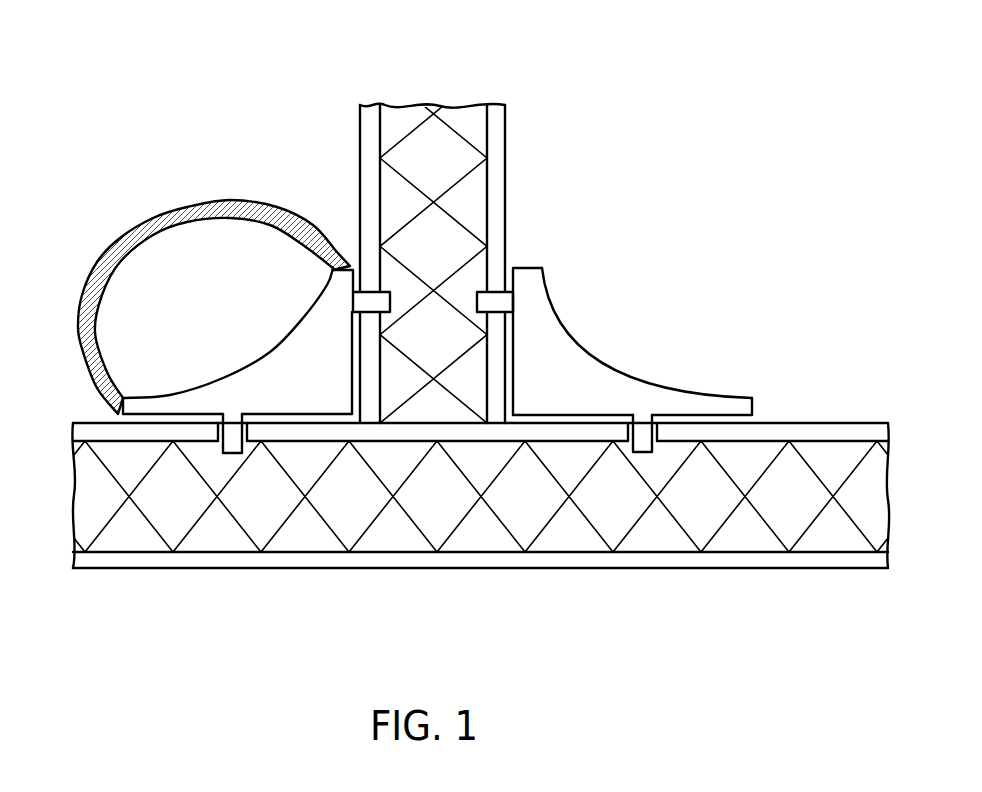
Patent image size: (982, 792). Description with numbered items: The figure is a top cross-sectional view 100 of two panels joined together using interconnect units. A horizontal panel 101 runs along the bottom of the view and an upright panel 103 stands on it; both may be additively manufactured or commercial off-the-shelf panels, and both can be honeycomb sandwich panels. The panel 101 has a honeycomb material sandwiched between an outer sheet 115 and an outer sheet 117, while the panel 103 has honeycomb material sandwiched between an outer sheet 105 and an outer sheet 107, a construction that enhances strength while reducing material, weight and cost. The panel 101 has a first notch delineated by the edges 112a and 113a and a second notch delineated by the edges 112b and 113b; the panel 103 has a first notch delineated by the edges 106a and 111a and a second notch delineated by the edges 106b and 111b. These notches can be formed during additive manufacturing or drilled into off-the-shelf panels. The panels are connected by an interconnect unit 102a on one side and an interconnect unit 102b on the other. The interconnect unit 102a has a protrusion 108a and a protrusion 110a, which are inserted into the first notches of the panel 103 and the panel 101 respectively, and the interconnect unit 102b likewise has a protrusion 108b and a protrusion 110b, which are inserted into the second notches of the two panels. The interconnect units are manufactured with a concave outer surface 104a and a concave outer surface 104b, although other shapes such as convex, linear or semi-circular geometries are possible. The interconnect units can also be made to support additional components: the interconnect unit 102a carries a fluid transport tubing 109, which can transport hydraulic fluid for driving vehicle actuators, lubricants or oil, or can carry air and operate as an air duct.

The top cross-sectional view 100 is at (163, 90).
The panel 101 is at (458, 501).
The panel 103 is at (455, 169).
The outer sheet 105 is at (368, 140).
The outer sheet 107 is at (500, 155).
The protrusion 108a is at (371, 290).
The protrusion 108b is at (493, 291).
The fluid transport tubing 109 is at (120, 257).
The edge 111a is at (353, 268).
The edge 111b is at (490, 291).
The edge 106a is at (345, 303).
The edge 106b is at (513, 311).
The interconnect unit 102a is at (300, 365).
The interconnect unit 102b is at (563, 350).
The concave outer surface 104a is at (222, 378).
The concave outer surface 104b is at (652, 383).
The protrusion 110a is at (233, 441).
The protrusion 110b is at (642, 438).
The edge 112a is at (212, 441).
The edge 112b is at (625, 434).
The edge 113a is at (262, 442).
The edge 113b is at (660, 437).
The outer sheet 115 is at (818, 423).
The outer sheet 117 is at (853, 570).